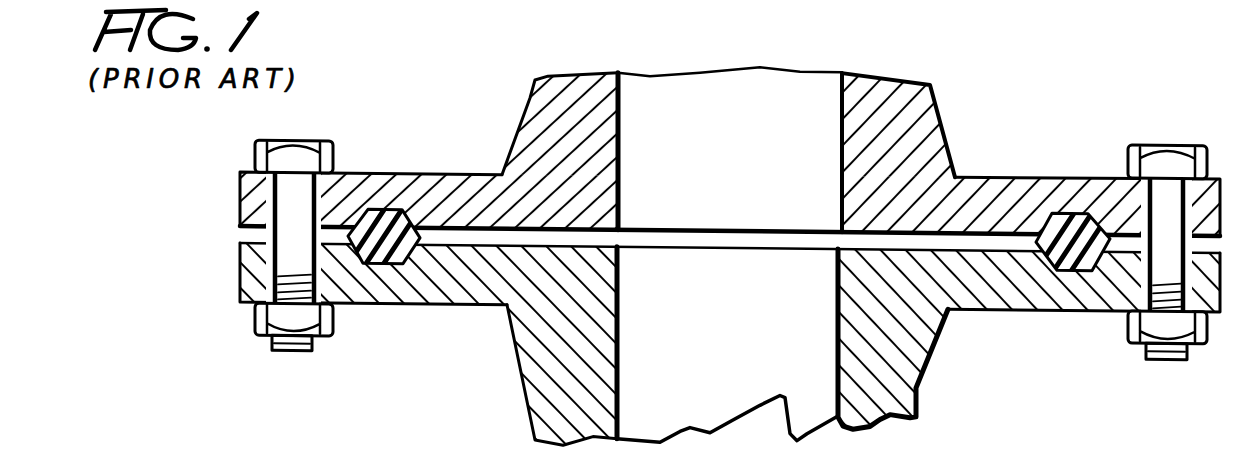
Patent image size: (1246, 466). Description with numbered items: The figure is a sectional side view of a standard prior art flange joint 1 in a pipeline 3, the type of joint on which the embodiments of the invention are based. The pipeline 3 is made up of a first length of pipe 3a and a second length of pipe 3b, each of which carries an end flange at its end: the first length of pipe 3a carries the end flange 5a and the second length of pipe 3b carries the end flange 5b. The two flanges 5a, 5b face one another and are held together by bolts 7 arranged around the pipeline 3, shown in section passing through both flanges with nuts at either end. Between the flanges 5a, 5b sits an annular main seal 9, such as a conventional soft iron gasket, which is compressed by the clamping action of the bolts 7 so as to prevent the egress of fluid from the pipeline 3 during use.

The flange joint 1 is at (1030, 96).
The pipeline 3 is at (917, 88).
The first length of pipe 3a is at (578, 100).
The second length of pipe 3b is at (552, 378).
The end flange 5a is at (373, 180).
The end flange 5b is at (458, 287).
The bolts 7 is at (1178, 196).
The annular main seal 9 is at (1063, 268).